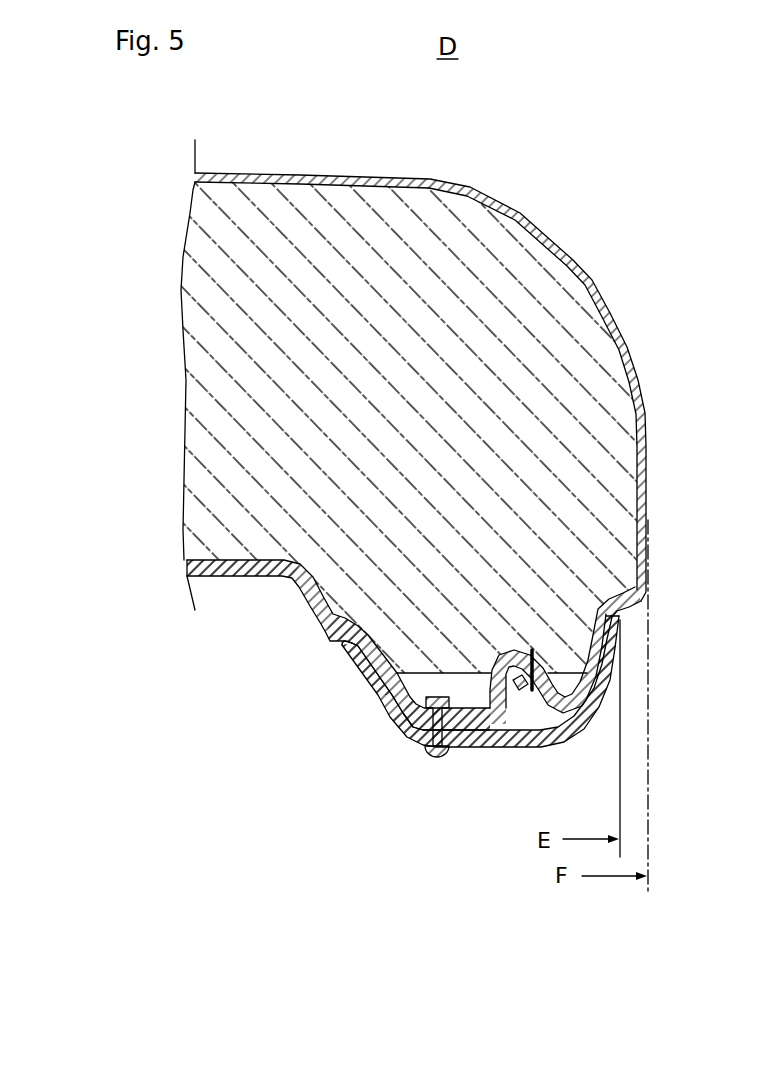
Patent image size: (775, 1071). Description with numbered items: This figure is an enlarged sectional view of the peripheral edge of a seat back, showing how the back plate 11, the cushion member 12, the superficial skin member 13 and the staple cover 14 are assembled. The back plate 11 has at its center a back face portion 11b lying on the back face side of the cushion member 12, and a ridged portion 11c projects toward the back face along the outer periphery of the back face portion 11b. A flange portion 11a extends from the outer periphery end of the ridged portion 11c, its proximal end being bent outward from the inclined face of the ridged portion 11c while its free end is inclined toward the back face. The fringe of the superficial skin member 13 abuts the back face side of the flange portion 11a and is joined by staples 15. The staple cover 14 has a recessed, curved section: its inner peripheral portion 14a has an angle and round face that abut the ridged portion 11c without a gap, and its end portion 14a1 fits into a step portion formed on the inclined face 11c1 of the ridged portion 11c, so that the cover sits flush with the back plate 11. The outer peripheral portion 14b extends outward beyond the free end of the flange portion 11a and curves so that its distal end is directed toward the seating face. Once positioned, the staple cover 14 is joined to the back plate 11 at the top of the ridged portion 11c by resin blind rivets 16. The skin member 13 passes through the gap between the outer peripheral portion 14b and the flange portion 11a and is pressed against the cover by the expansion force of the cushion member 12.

The back plate 11 is at (268, 618).
The flange portion 11a is at (562, 668).
The back face portion 11b is at (230, 578).
The ridged portion 11c is at (458, 705).
The inclined face 11c1 is at (340, 640).
The cushion member 12 is at (204, 280).
The superficial skin member 13 is at (523, 216).
The staple cover 14 is at (348, 691).
The inner peripheral portion 14a is at (380, 720).
The end portion 14a1 is at (340, 643).
The outer peripheral portion 14b is at (592, 745).
The staple 15 is at (526, 690).
The blind rivet 16 is at (445, 760).